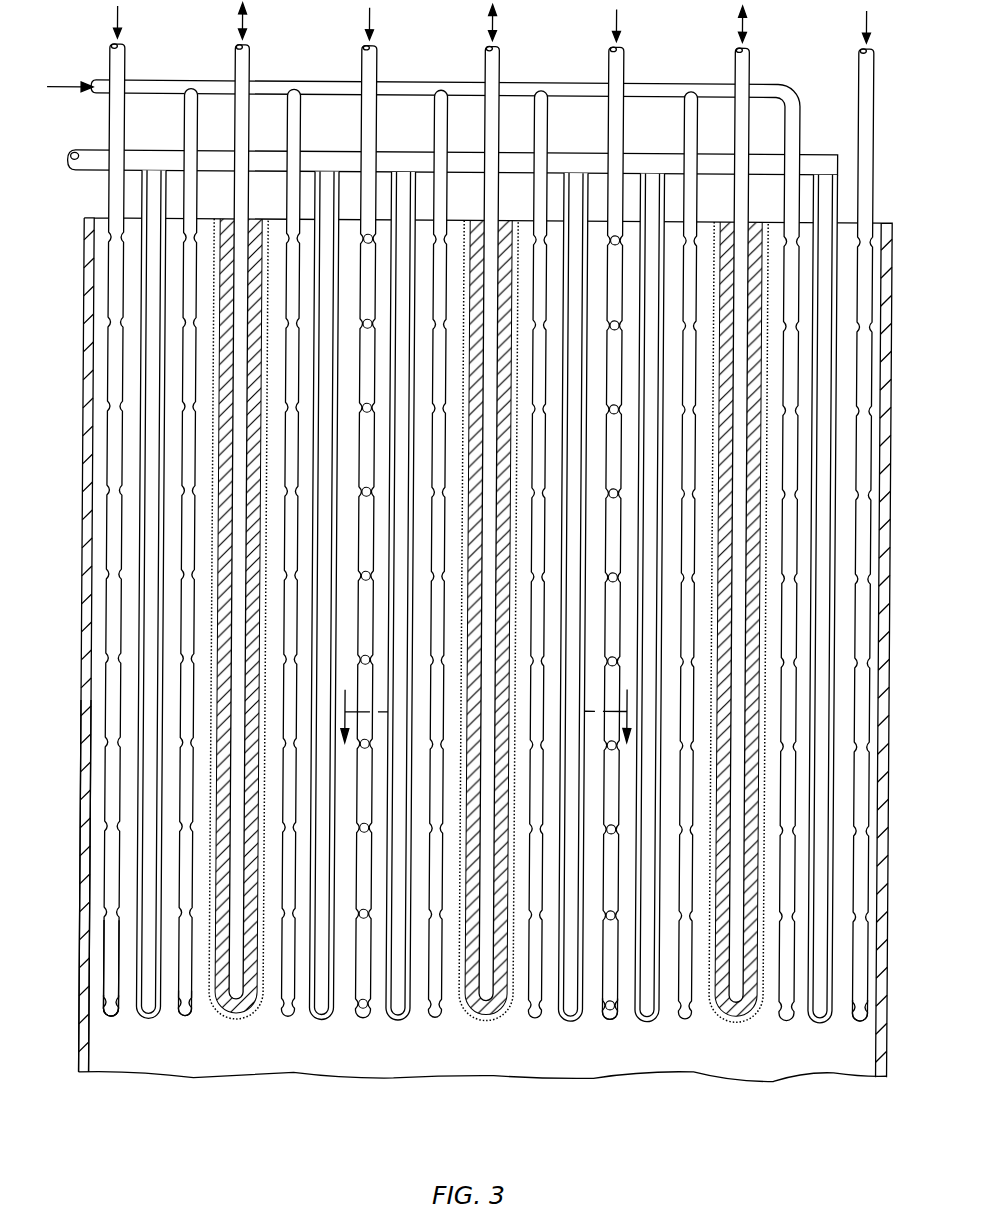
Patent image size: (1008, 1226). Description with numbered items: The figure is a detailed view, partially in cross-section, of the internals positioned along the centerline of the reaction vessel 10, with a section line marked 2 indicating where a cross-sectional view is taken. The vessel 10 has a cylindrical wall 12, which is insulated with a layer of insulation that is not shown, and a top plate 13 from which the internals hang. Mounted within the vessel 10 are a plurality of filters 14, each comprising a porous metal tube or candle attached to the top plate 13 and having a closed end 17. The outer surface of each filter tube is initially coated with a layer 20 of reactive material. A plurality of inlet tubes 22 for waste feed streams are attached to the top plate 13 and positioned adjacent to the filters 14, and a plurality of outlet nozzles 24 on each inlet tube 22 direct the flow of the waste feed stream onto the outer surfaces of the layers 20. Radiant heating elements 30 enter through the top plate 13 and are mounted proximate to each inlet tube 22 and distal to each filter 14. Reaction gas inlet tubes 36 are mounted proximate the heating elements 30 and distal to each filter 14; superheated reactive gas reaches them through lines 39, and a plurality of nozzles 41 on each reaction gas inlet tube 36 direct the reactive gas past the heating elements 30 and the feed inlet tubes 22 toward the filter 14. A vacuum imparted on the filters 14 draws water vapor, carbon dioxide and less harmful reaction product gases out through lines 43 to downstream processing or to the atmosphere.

The reaction vessel 10 is at (802, 53).
The cylindrical wall 12 is at (86, 750).
The top plate 13 is at (886, 222).
The filter 14 is at (88, 290).
The closed end 17 is at (253, 1019).
The layer of reactive material 20 is at (86, 620).
The inlet tube 22 is at (301, 110).
The outlet nozzle 24 is at (196, 1004).
The radiant heating element 30 is at (149, 1020).
The reaction gas inlet tube 36 is at (112, 1020).
The line 39 is at (125, 68).
The nozzle 41 is at (124, 915).
The line 43 is at (250, 55).
The section line 2- 2 is at (486, 732).